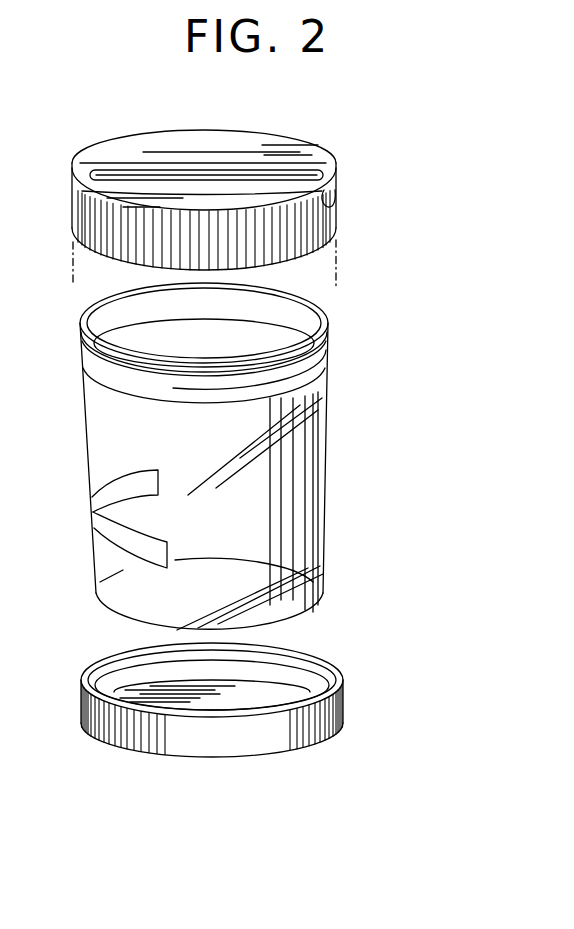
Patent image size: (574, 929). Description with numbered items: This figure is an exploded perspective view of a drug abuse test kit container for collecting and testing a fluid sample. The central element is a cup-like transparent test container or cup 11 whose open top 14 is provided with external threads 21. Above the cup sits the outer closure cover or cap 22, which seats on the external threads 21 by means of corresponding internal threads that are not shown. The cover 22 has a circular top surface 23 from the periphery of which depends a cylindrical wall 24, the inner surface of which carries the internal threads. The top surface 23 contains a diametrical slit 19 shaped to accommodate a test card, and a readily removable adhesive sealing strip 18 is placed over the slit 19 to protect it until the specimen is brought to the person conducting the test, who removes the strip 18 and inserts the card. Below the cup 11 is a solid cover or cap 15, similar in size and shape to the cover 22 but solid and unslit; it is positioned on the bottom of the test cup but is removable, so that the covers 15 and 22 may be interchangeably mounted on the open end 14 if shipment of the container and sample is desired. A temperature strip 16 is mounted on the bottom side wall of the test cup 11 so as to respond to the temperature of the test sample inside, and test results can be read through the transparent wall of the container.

The test container 11 is at (328, 455).
The open top 14 is at (317, 303).
The solid cover 15 is at (80, 698).
The temperature strip 16 is at (94, 532).
The adhesive sealing strip 18 is at (82, 163).
The diametrical slit 19 is at (242, 170).
The external threads 21 is at (330, 340).
The outer closure cover 22 is at (338, 216).
The circular top surface 23 is at (160, 142).
The cylindrical wall 24 is at (336, 166).